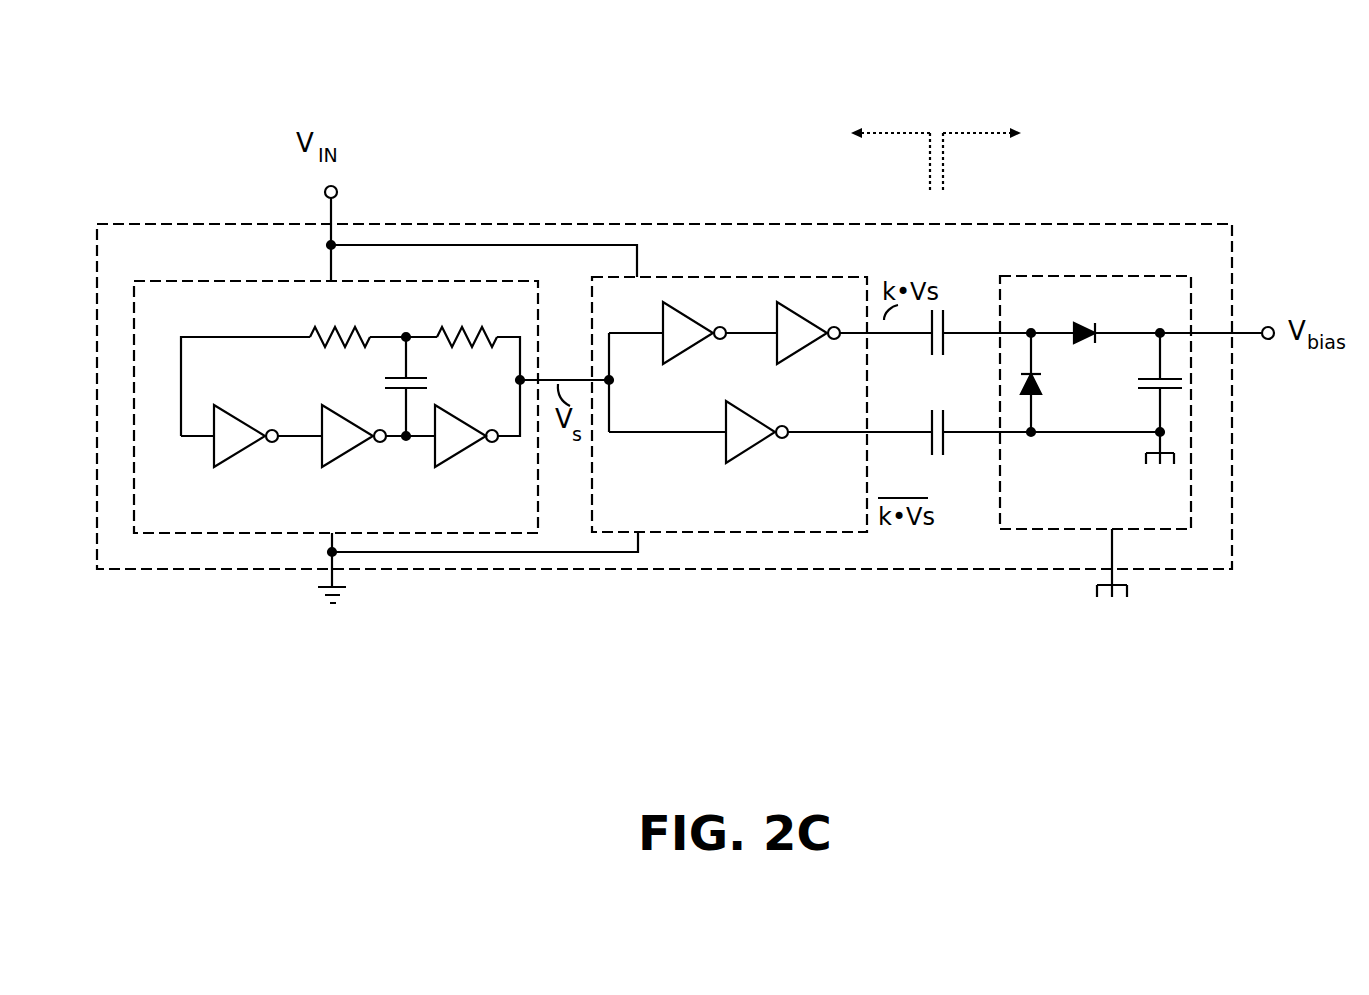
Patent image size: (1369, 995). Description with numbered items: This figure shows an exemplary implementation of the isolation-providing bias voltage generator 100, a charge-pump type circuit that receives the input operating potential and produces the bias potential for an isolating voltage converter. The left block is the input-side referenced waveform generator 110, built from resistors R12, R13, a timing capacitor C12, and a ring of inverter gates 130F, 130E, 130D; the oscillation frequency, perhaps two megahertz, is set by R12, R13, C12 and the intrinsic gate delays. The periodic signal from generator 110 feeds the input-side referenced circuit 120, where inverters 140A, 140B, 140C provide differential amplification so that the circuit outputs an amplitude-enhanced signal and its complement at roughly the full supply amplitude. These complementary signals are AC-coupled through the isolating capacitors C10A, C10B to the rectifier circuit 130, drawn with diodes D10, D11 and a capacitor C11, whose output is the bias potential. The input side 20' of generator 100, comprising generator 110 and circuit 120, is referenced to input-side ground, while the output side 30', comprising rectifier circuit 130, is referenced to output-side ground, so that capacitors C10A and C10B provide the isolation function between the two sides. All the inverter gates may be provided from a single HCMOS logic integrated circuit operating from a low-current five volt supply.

The bias voltage generator 100 is at (508, 104).
The waveform generator 110 is at (200, 281).
The input-side referenced circuit 120 is at (735, 277).
The rectifier circuit 130 is at (1042, 276).
The inverter gate 130F is at (243, 468).
The inverter gate 130E is at (345, 468).
The inverter gate 130D is at (446, 470).
The inverter 140A is at (696, 350).
The inverter 140B is at (814, 350).
The inverter 140C is at (752, 452).
The resistor R12 is at (340, 321).
The resistor R13 is at (467, 321).
The timing capacitor C12 is at (372, 386).
The AC-coupling capacitor C10A is at (939, 350).
The AC-coupling capacitor C10B is at (926, 432).
The diode D10 is at (1032, 403).
The diode D11 is at (1079, 318).
The filter capacitor C11 is at (1132, 382).
The input side 20' is at (862, 156).
The output side 30' is at (1020, 156).